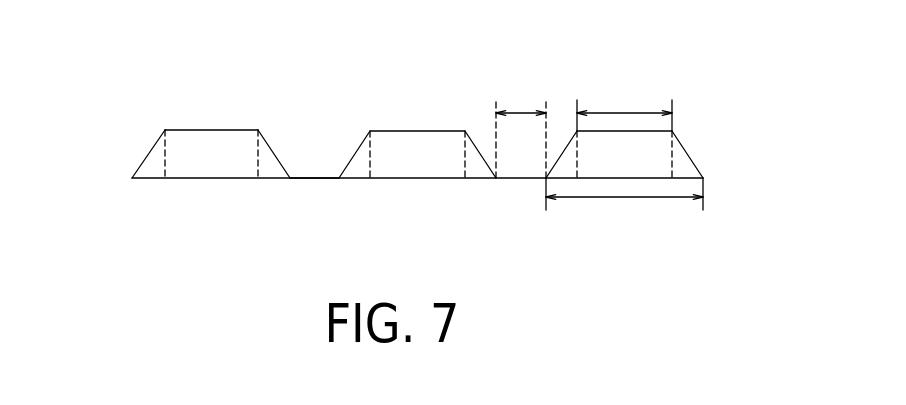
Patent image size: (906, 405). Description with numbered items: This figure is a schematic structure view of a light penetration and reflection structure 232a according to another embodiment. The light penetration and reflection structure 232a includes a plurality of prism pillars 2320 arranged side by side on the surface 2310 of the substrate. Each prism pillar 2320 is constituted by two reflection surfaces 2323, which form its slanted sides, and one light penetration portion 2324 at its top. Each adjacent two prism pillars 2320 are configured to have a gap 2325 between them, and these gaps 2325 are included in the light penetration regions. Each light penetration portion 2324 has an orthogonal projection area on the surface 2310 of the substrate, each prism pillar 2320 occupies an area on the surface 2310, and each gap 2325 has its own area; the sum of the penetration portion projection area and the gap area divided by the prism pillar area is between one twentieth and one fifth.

The light penetration and reflection structure 232a is at (792, 38).
The surface of the substrate 2310 is at (479, 180).
The prism pillar 2320 is at (179, 137).
The reflection surface 2323 is at (149, 152).
The light penetration portion 2324 is at (211, 130).
The gap 2325 is at (313, 162).